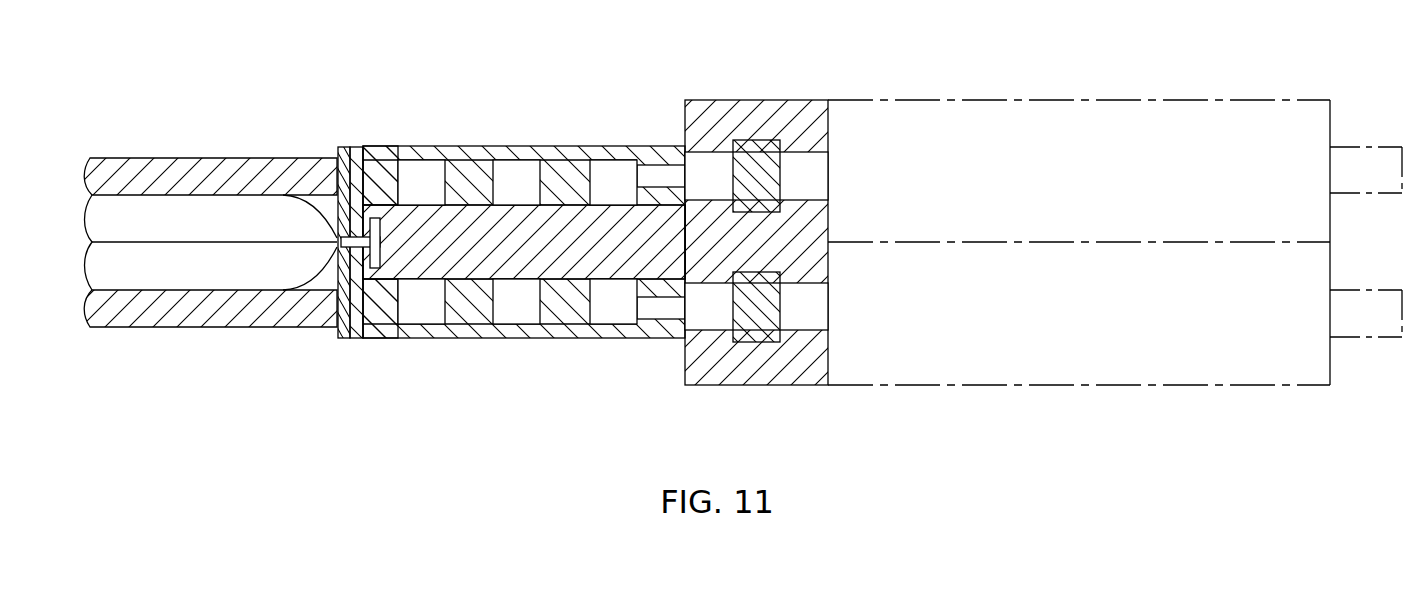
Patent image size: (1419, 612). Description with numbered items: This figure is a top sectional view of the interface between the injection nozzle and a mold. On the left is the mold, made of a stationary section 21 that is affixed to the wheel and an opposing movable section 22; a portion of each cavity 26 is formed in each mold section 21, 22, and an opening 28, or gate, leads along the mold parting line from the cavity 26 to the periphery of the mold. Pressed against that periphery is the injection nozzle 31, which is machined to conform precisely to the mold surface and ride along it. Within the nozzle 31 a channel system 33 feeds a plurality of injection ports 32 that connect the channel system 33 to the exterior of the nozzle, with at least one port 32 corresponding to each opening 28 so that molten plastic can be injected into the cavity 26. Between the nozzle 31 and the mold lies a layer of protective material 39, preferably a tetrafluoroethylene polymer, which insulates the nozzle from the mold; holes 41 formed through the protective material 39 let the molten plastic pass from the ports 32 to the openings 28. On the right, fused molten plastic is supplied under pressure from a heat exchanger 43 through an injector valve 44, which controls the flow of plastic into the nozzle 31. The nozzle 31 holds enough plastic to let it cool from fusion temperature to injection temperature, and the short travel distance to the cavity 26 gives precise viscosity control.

The stationary section 21 is at (137, 172).
The movable section 22 is at (123, 318).
The cavity 26 is at (190, 262).
The opening 28 is at (278, 192).
The injection nozzle 31 is at (565, 140).
The injection port 32 is at (362, 172).
The channel system 33 is at (418, 178).
The protective material 39 is at (338, 195).
The hole 41 is at (338, 292).
The heat exchanger 43 is at (908, 125).
The injector valve 44 is at (757, 172).